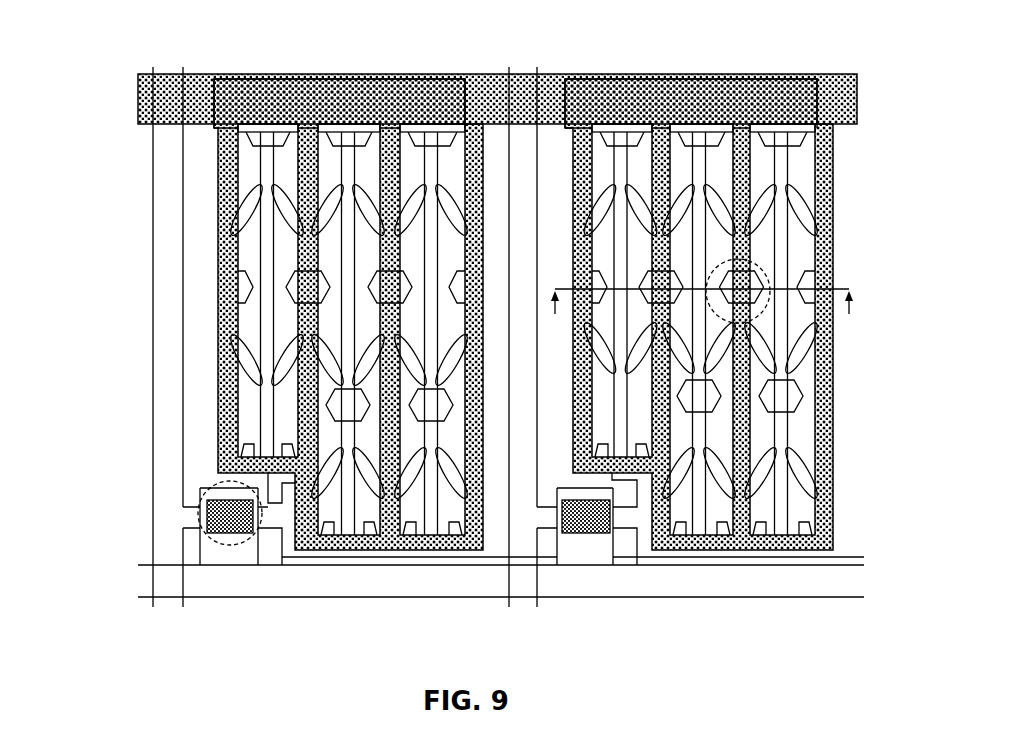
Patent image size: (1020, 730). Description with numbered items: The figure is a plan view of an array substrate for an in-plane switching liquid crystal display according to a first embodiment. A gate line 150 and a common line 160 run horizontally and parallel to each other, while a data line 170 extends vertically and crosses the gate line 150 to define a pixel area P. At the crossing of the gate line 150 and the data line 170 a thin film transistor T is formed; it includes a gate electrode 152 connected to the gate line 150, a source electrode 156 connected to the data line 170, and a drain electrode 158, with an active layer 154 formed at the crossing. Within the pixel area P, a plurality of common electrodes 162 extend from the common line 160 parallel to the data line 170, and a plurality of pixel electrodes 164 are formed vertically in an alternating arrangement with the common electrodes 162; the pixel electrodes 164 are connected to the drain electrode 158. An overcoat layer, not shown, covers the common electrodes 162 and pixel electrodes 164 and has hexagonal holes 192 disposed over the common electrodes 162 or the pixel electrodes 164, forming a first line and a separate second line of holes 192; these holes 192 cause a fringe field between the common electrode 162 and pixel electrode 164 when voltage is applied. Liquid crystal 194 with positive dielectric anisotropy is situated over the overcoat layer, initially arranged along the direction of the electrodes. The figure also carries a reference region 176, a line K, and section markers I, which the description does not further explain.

The gate line 150 is at (483, 606).
The gate electrode 152 is at (225, 557).
The active layer 154 is at (198, 505).
The source electrode 156 is at (193, 537).
The drain electrode 158 is at (274, 548).
The common line 160 is at (595, 69).
The common electrodes 162 is at (210, 177).
The pixel electrodes 164 is at (248, 415).
The data line 170 is at (152, 355).
The storage electrode 176 is at (283, 78).
The holes 192 is at (763, 267).
The liquid crystal 194 is at (229, 213).
The pixel area P is at (196, 334).
The thin film transistor T is at (245, 540).
The line K is at (795, 283).
The section line I- I is at (702, 316).